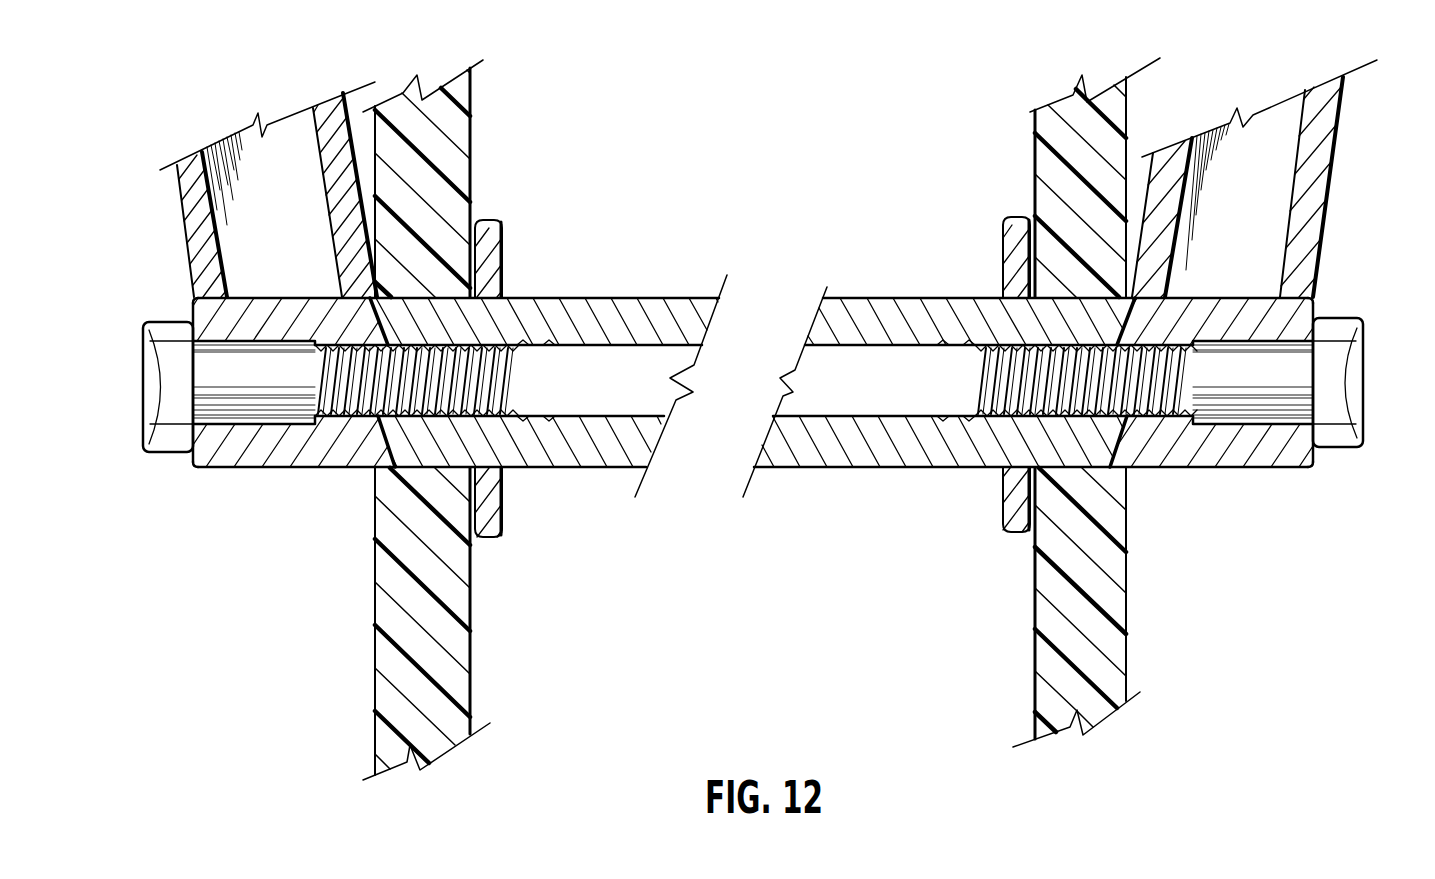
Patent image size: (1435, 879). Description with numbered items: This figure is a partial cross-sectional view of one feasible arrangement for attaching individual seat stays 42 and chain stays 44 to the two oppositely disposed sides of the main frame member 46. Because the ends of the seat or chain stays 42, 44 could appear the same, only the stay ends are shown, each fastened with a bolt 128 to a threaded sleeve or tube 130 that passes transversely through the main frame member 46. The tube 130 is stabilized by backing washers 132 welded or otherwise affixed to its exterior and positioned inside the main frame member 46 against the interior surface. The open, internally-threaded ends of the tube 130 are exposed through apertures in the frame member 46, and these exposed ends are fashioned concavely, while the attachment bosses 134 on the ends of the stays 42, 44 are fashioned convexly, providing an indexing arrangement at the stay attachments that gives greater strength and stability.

The seat stay 42 is at (1363, 242).
The chain stay 44 is at (1367, 105).
The main frame member 46 is at (1035, 630).
The bolt 128 is at (1192, 522).
The threaded sleeve or tube 130 is at (620, 298).
The backing washer 132 is at (1003, 222).
The attachment boss 134 is at (1275, 425).